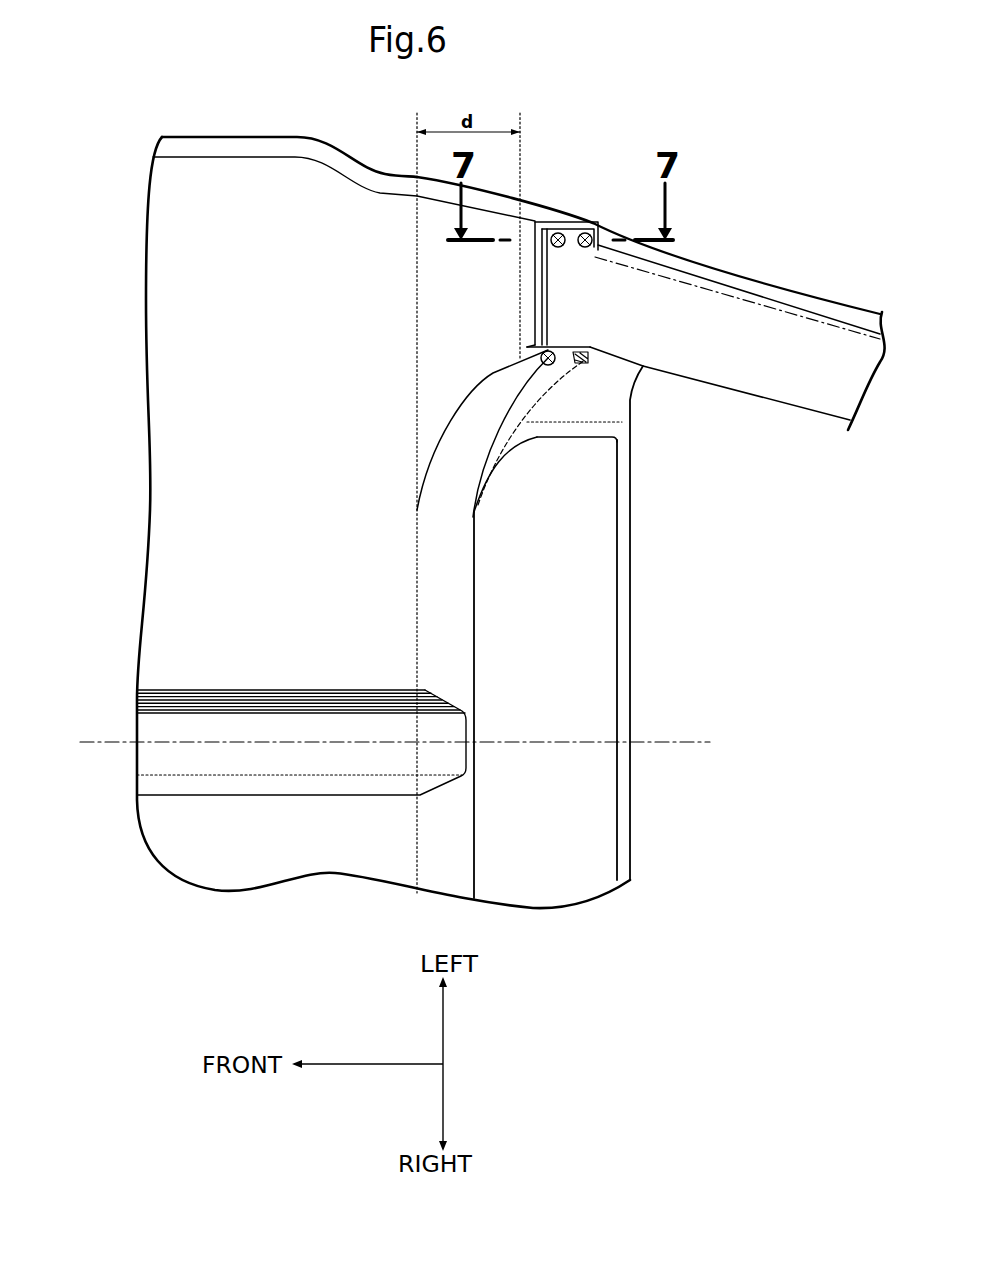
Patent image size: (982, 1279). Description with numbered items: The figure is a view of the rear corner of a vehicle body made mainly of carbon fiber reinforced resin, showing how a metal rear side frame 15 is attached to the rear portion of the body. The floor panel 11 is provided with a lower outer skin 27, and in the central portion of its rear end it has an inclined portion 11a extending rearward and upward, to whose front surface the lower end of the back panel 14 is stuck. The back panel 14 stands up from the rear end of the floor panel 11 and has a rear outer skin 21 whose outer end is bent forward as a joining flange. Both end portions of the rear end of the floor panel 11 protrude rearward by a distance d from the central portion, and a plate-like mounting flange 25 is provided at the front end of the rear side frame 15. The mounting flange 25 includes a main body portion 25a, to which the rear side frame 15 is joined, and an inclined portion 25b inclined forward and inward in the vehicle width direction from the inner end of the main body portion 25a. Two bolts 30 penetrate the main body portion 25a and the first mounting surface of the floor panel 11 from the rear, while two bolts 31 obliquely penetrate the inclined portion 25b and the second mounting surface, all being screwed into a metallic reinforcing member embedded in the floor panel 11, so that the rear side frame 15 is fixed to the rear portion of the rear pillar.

The floor panel 11 is at (134, 348).
The inclined portion 11a is at (452, 617).
The back panel 14 is at (638, 622).
The rear side frame 15 is at (762, 320).
The outer skin 21 is at (607, 794).
The mounting flange 25 is at (528, 298).
The main body portion 25a is at (578, 232).
The inclined portion 25b is at (540, 356).
The lower outer skin 27 is at (166, 513).
The bolts 30 is at (586, 249).
The bolts 31 is at (580, 365).